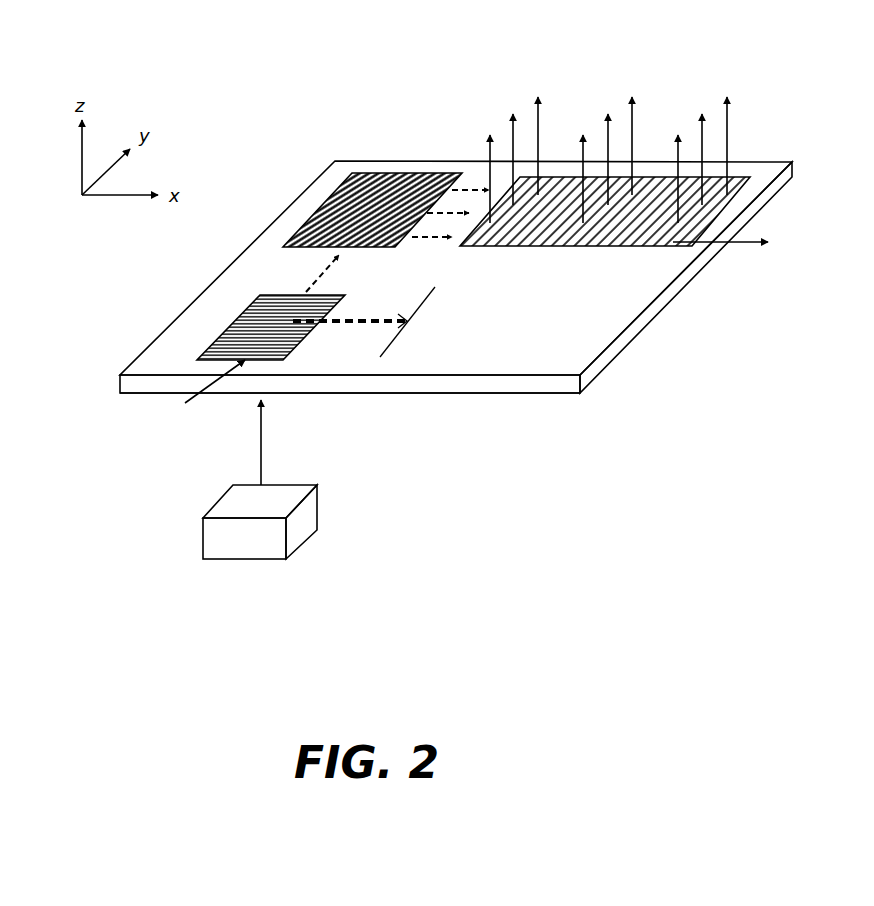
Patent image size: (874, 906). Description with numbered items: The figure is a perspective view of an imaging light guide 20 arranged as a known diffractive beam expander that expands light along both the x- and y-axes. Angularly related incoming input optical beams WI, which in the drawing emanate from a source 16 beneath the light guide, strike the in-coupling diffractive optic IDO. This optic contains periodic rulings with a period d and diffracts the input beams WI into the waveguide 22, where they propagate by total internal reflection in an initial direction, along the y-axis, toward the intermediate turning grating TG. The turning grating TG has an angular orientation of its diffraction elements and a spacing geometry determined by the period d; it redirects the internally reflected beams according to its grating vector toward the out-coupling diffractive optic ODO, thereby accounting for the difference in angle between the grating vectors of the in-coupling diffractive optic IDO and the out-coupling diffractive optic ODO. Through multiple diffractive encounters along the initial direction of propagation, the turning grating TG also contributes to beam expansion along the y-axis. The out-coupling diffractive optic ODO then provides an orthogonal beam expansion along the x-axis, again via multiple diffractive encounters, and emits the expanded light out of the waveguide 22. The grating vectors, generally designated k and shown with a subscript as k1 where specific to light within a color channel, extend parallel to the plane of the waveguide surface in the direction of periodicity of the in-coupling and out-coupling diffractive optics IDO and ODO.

The radiation source 16 is at (317, 510).
The imaging light guide 20 is at (746, 367).
The waveguide 22 is at (547, 394).
The turning grating TG is at (345, 180).
The out-coupling diffractive optic ODO is at (723, 217).
The in-coupling diffractive optic IDO is at (237, 320).
The input optical beams WI is at (261, 456).
The grating vector k is at (183, 403).
The grating vector k1 is at (750, 246).
The period d is at (364, 322).